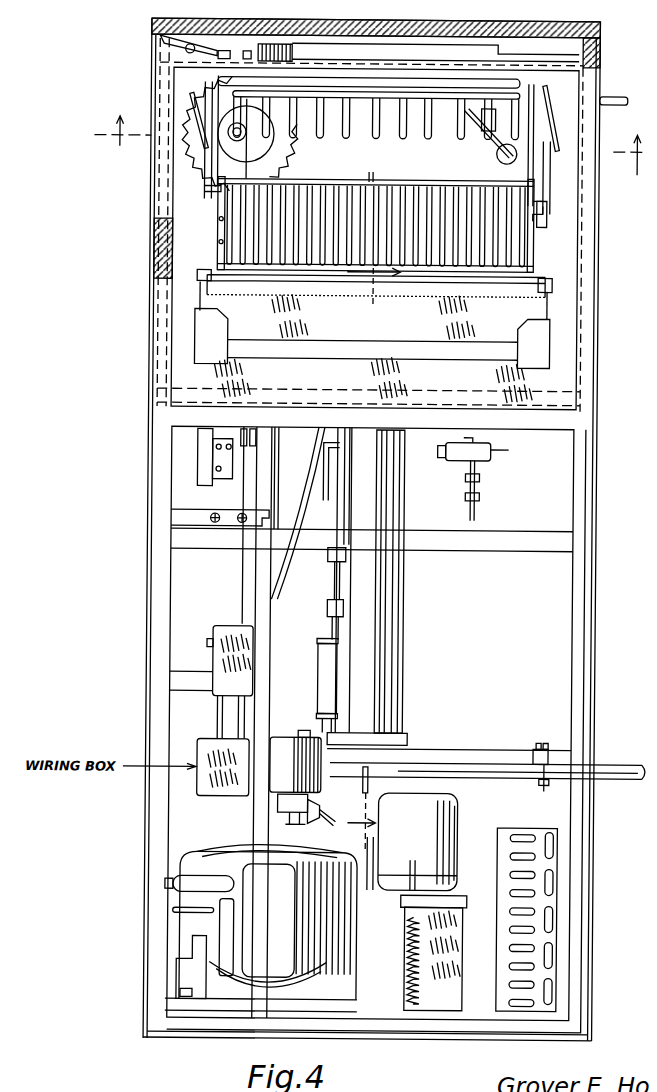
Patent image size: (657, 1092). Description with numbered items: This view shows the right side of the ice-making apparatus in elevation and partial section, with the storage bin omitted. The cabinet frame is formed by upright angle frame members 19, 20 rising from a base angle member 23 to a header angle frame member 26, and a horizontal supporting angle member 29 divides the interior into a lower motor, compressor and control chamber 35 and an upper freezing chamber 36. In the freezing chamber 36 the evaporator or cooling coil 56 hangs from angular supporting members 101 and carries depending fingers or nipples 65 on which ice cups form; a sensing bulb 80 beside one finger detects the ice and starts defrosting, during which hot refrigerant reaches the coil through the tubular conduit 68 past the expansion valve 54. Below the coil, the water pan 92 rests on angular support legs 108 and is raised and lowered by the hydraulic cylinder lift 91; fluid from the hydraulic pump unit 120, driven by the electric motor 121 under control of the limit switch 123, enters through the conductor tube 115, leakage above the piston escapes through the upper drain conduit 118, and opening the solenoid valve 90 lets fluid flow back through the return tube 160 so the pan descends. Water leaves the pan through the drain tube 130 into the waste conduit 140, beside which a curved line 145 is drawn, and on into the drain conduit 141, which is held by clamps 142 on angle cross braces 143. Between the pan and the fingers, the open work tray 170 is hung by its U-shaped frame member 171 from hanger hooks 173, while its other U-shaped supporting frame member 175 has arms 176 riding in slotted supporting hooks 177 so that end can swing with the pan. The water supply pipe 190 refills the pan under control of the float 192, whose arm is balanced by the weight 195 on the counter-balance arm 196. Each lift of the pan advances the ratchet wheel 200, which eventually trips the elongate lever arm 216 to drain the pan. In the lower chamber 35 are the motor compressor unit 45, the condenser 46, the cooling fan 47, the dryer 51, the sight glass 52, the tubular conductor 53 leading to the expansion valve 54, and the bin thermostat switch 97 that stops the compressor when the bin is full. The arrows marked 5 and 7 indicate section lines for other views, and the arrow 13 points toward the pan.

The section line 5- 5 is at (375, 152).
The section line 7- 7 is at (371, 560).
The drip tray direction 13 is at (424, 294).
The upright angle frame member 19 is at (153, 800).
The upright angle frame member 20 is at (590, 840).
The base angle member 23 is at (388, 1041).
The header angle frame member 26 is at (572, 77).
The horizontal supporting angle member 29 is at (556, 430).
The lower motor, compressor and control chamber 35 is at (567, 591).
The upper freezing chamber 36 is at (178, 326).
The motor compressor unit 45 is at (250, 848).
The condenser 46 is at (549, 921).
The cooling fan 47 is at (461, 888).
The dryer 51 is at (322, 662).
The sight glass 52 is at (333, 583).
The tubular conductor 53 is at (345, 520).
The expansion valve 54 is at (471, 461).
The evaporator or cooling coil 56 is at (503, 92).
The depending fingers or nipples 65 is at (418, 142).
The tubular conduit 68 is at (329, 833).
The sensing bulb 80 is at (495, 145).
The hydraulic pump control solenoid valve 90 is at (285, 800).
The hydraulic cylinder lift 91 is at (386, 659).
The water pan 92 is at (503, 316).
The bin thermostat switch 97 is at (219, 645).
The angular supporting members 101 is at (287, 44).
The angular support legs 108 is at (538, 337).
The conductor tube 115 is at (388, 790).
The upper drain conduit 118 is at (320, 452).
The hydraulic pump unit 120 is at (443, 1000).
The electric motor 121 is at (418, 850).
The limit switch 123 is at (200, 452).
The drain tube 130 is at (249, 436).
The waste conduit 140 is at (236, 561).
The drain conduit 141 is at (630, 763).
The clamps 142 is at (542, 783).
The angle cross braces 143 is at (540, 748).
The curved pipe 145 is at (299, 502).
The return tube 160 is at (330, 812).
The open work tray 170 is at (508, 244).
The U-shaped frame member 171 is at (201, 118).
The U-shaped hanger hooks 173 is at (196, 98).
The U-shaped supporting frame member 175 is at (218, 245).
The arms 176 is at (544, 214).
The slotted supporting hooks 177 is at (201, 155).
The water supply pipe 190 is at (608, 97).
The float 192 is at (278, 139).
The weight 195 is at (498, 163).
The counter-balance arm 196 is at (466, 142).
The ratchet wheel 200 is at (281, 161).
The elongate lever arm 216 is at (200, 21).